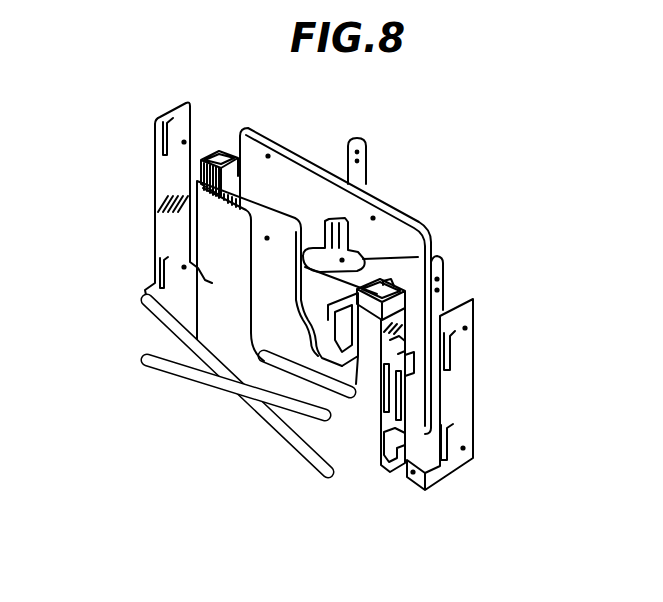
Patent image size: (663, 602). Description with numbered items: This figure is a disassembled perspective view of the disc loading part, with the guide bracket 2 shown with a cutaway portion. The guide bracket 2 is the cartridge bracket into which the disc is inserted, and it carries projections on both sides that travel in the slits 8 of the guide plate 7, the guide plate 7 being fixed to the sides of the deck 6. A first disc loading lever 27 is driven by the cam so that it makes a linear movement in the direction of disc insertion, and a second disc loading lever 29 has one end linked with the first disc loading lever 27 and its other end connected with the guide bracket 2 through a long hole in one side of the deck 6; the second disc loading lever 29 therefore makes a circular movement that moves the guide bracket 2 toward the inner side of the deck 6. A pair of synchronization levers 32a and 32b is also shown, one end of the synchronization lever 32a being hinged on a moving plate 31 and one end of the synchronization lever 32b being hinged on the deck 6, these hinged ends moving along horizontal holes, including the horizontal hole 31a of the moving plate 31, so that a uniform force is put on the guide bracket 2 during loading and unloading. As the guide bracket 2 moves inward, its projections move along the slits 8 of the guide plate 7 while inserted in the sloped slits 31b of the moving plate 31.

The guide bracket 2 is at (209, 152).
The deck 6 is at (400, 236).
The guide plate 7 is at (465, 367).
The slits 8 is at (444, 440).
The first disc loading lever 27 is at (362, 150).
The second disc loading lever 29 is at (366, 264).
The moving plate 31 is at (357, 445).
The horizontal hole 31a is at (191, 257).
The sloped slits 31b is at (395, 437).
The synchronization lever 32a is at (170, 368).
The synchronization lever 32b is at (290, 445).